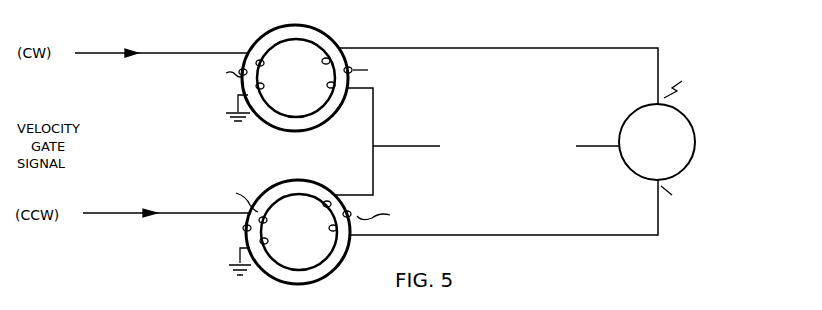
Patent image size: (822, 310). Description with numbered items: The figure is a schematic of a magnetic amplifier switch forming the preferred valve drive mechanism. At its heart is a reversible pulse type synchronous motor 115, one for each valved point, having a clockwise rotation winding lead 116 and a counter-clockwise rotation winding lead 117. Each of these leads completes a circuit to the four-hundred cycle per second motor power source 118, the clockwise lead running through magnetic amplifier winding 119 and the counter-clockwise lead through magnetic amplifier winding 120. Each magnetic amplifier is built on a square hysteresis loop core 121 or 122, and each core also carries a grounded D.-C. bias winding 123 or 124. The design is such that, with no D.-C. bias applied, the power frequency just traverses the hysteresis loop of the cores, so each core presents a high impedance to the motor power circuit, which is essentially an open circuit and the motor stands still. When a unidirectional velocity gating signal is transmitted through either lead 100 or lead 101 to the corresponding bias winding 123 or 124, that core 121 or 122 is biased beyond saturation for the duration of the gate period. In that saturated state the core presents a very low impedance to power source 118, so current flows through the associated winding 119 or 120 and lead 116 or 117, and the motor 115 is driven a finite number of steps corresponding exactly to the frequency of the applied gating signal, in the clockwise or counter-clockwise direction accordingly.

The gating signal lead 100 is at (93, 54).
The gating signal lead 101 is at (104, 214).
The reversible pulse type synchronous motor 115 is at (694, 157).
The clockwise rotation winding lead 116 is at (596, 48).
The counter-clockwise rotation winding lead 117 is at (564, 234).
The motor power source 118 is at (500, 131).
The magnetic amplifier winding 119 is at (330, 82).
The magnetic amplifier winding 120 is at (356, 210).
The square hysteresis loop core 121 is at (320, 41).
The square hysteresis loop core 122 is at (319, 274).
The grounded D.-C. bias winding 123 is at (262, 78).
The grounded D.-C. bias winding 124 is at (262, 232).